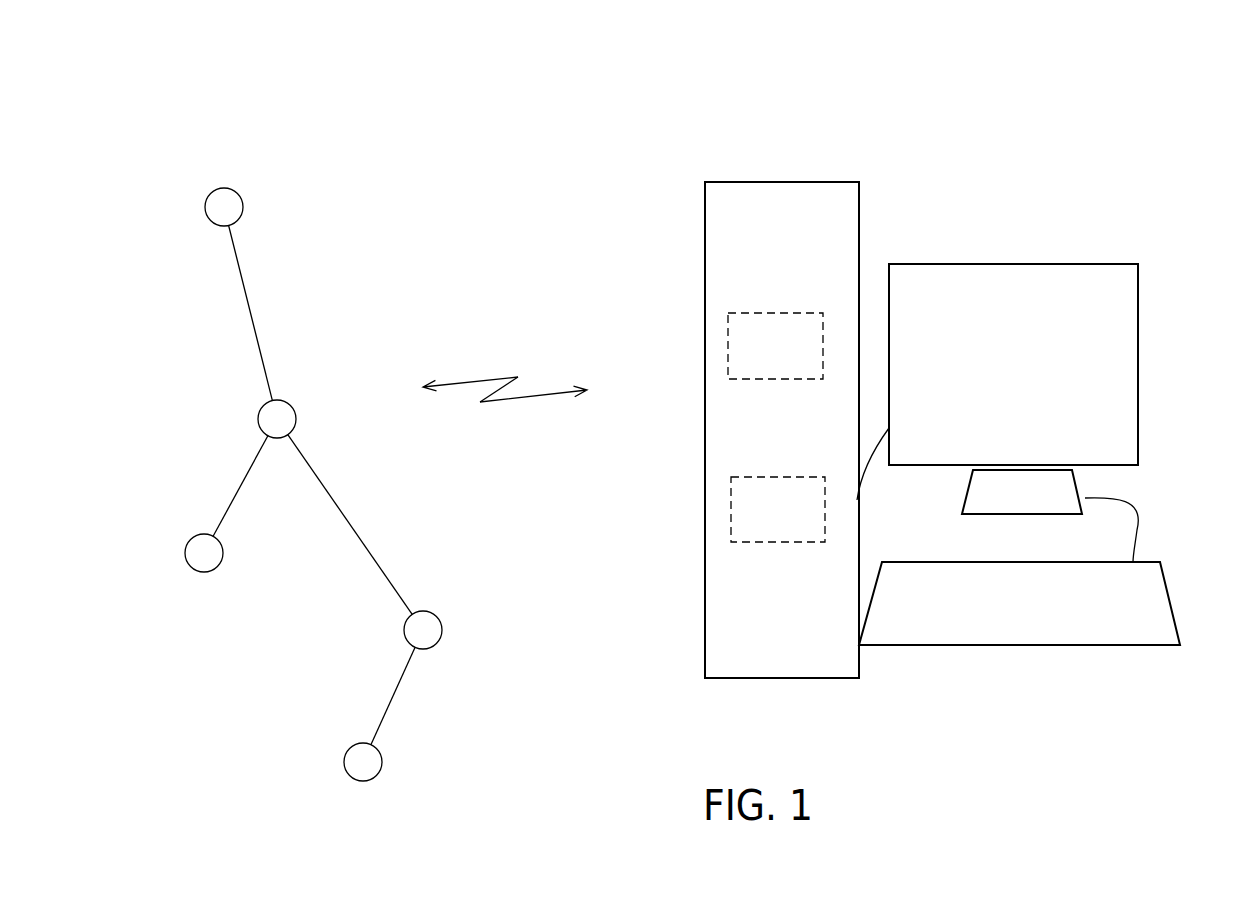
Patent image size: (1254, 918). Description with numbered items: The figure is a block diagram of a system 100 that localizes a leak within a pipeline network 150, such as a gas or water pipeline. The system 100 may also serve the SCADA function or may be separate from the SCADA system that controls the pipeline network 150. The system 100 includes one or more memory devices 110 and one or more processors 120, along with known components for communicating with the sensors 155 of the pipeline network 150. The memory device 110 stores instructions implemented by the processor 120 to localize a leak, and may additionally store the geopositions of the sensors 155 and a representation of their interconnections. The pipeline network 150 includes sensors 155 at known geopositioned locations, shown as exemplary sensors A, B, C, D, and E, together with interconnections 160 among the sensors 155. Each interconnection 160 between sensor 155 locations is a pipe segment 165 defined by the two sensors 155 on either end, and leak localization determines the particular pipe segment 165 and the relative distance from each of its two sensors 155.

The system 100 is at (1108, 160).
The memory device 110 is at (775, 346).
The processor 120 is at (778, 509).
The pipeline network 150 is at (353, 126).
The sensors 155 is at (175, 503).
The interconnections 160 is at (321, 549).
The pipe segment 165 is at (368, 678).